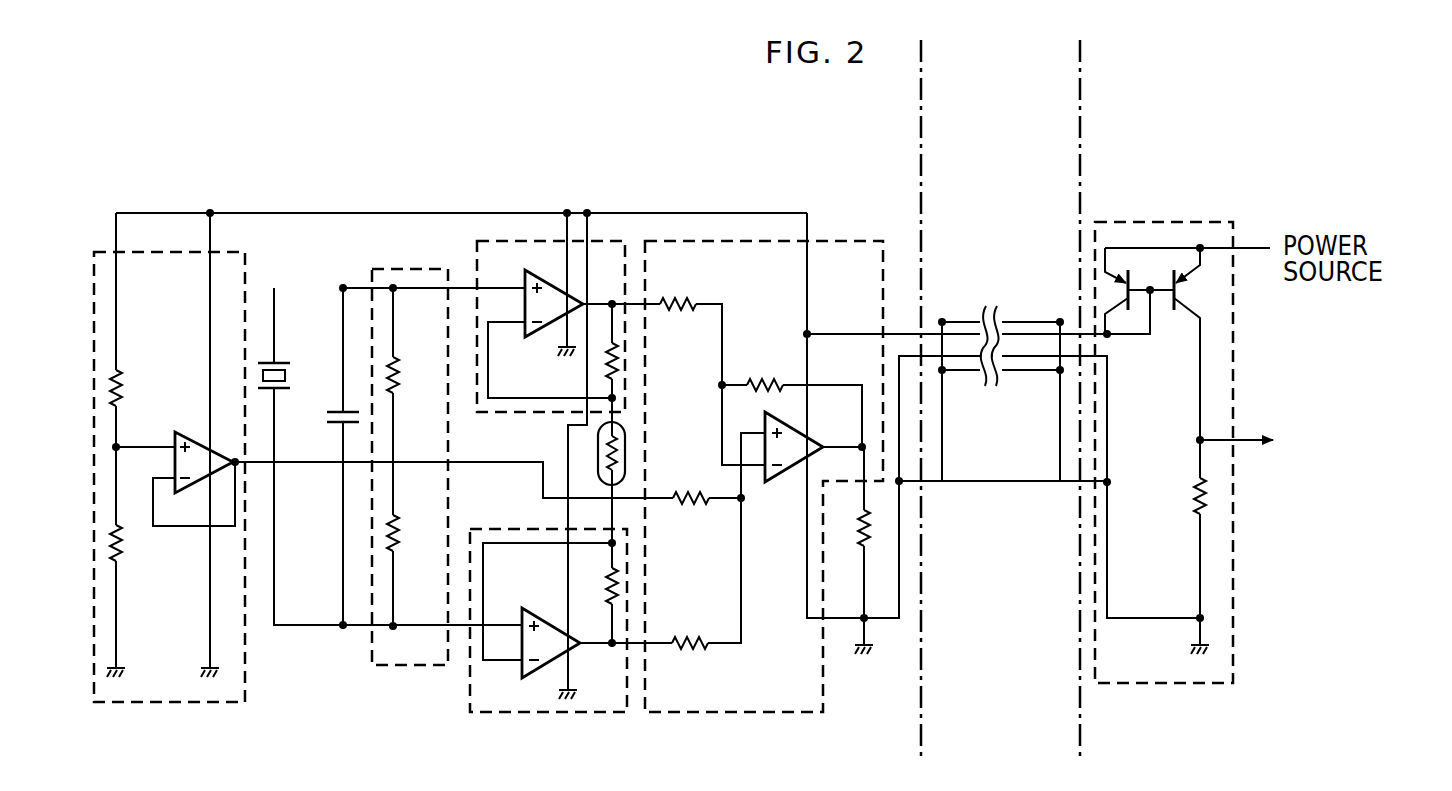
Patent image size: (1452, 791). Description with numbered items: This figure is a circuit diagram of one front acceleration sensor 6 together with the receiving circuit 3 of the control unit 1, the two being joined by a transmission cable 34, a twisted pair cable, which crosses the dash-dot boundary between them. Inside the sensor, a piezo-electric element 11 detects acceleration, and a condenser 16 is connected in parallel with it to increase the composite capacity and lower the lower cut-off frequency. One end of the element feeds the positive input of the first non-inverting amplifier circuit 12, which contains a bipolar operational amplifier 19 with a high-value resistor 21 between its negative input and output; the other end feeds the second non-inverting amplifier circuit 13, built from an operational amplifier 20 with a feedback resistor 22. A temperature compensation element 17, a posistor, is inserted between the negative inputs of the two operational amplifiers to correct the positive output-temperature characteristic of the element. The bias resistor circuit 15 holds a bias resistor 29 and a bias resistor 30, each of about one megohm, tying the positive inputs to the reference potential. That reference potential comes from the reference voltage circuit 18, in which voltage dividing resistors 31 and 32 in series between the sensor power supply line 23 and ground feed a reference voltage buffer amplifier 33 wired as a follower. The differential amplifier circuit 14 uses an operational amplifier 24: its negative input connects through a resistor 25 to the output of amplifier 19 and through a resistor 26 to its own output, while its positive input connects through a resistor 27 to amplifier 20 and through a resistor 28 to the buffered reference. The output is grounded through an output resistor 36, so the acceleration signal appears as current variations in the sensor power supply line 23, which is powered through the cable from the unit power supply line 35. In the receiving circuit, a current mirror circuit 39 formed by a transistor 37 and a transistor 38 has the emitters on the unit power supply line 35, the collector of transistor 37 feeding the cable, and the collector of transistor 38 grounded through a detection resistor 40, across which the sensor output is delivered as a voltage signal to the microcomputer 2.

The control unit 1 is at (1150, 170).
The microcomputer 2 is at (1320, 454).
The first receiving circuit 3 is at (1195, 222).
The first front acceleration sensor 6 is at (556, 150).
The piezo-electric element 11 is at (285, 360).
The first non-inverting amplifier circuit 12 is at (606, 241).
The second non-inverting amplifier circuit 13 is at (470, 680).
The differential amplifier circuit 14 is at (828, 241).
The bias resistor circuit 15 is at (376, 269).
The condenser 16 is at (325, 420).
The temperature compensation element 17 is at (604, 446).
The reference voltage circuit 18 is at (182, 252).
The operational amplifier 19 is at (536, 334).
The operational amplifier 20 is at (531, 613).
The resistor 21 is at (619, 364).
The resistor 22 is at (621, 587).
The sensor power supply line 23 is at (479, 213).
The operational amplifier 24 is at (779, 477).
The resistor 25 is at (692, 295).
The resistor 26 is at (768, 378).
The resistor 27 is at (690, 650).
The resistor 28 is at (688, 492).
The bias resistor 29 is at (406, 380).
The bias resistor 30 is at (401, 535).
The voltage dividing resistor 31 is at (127, 390).
The voltage dividing resistor 32 is at (123, 546).
The reference voltage buffer amplifier 33 is at (220, 451).
The transmission cable 34 is at (1020, 319).
The unit power supply line 35 is at (1252, 248).
The output resistor 36 is at (858, 540).
The transistor 37 is at (1118, 270).
The transistor 38 is at (1195, 294).
The current mirror circuit 39 is at (1142, 348).
The detection resistor 40 is at (1190, 488).